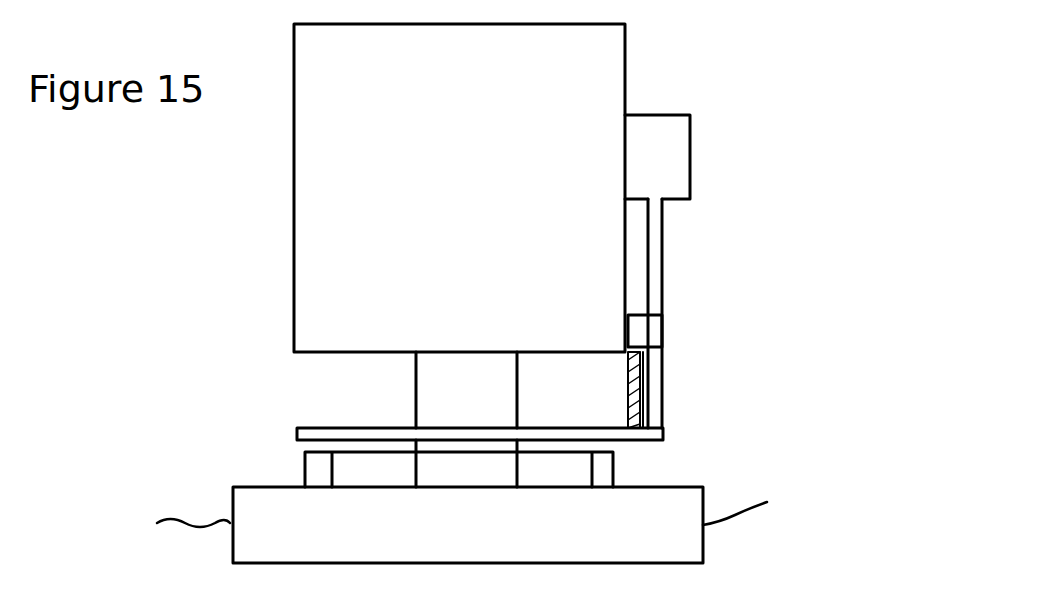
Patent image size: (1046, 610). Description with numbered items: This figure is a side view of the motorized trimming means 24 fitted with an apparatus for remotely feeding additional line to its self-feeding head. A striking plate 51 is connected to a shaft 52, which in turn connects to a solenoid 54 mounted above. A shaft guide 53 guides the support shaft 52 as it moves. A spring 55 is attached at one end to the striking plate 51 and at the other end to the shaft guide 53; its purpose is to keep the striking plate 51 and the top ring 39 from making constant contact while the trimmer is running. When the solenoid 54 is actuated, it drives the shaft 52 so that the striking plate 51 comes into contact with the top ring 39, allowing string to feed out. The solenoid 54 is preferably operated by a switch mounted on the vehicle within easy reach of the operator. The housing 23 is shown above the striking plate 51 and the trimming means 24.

The housing 23 is at (280, 310).
The motorized trimming means 24 is at (205, 500).
The top ring 39 is at (562, 462).
The striking plate 51 is at (296, 438).
The shaft 52 is at (684, 392).
The shaft guide 53 is at (694, 338).
The solenoid 54 is at (716, 172).
The spring 55 is at (660, 412).